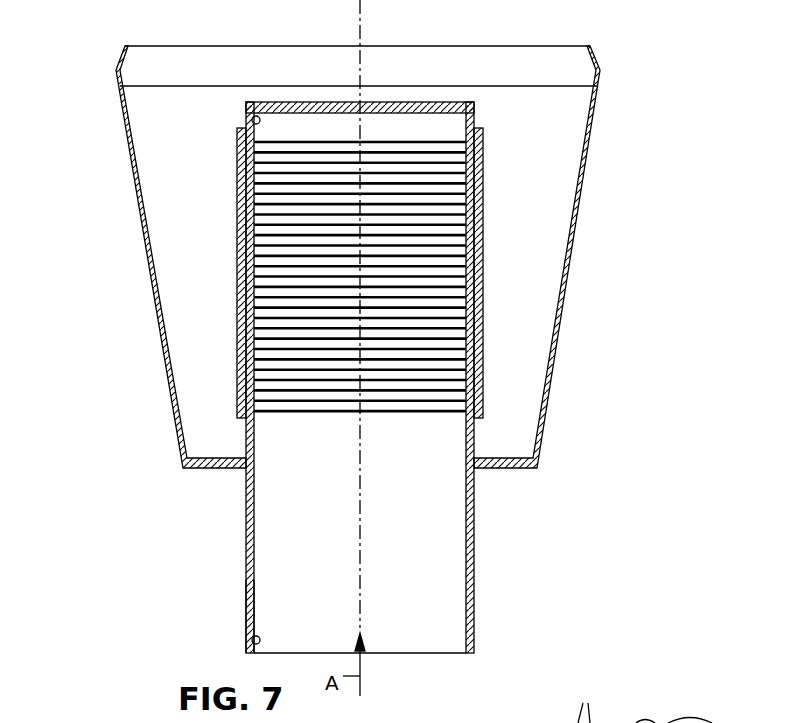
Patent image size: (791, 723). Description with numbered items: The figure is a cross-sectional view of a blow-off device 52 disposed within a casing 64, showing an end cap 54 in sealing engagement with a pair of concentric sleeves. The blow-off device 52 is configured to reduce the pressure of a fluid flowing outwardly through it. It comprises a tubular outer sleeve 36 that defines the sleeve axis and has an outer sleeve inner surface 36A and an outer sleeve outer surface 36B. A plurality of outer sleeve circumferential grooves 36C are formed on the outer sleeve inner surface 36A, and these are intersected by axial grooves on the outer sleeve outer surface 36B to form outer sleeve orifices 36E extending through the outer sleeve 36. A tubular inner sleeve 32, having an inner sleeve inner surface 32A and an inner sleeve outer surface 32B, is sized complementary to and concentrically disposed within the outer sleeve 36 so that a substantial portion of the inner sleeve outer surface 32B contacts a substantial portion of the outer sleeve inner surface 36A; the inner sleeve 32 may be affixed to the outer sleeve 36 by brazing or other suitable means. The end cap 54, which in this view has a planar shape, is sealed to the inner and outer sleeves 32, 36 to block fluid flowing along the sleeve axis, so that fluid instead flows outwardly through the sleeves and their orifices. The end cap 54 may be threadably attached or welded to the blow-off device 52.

The blow-off device 52 is at (423, 339).
The end cap 54 is at (400, 106).
The casing 64 is at (566, 298).
The inner sleeve 32 is at (319, 378).
The inner sleeve inner surface 32A is at (252, 642).
The inner sleeve outer surface 32B is at (247, 614).
The outer sleeve 36 is at (264, 262).
The outer sleeve inner surface 36A is at (246, 118).
The outer sleeve outer surface 36B is at (246, 337).
The outer sleeve circumferential grooves 36C is at (237, 300).
The outer sleeve orifices 36E is at (582, 703).